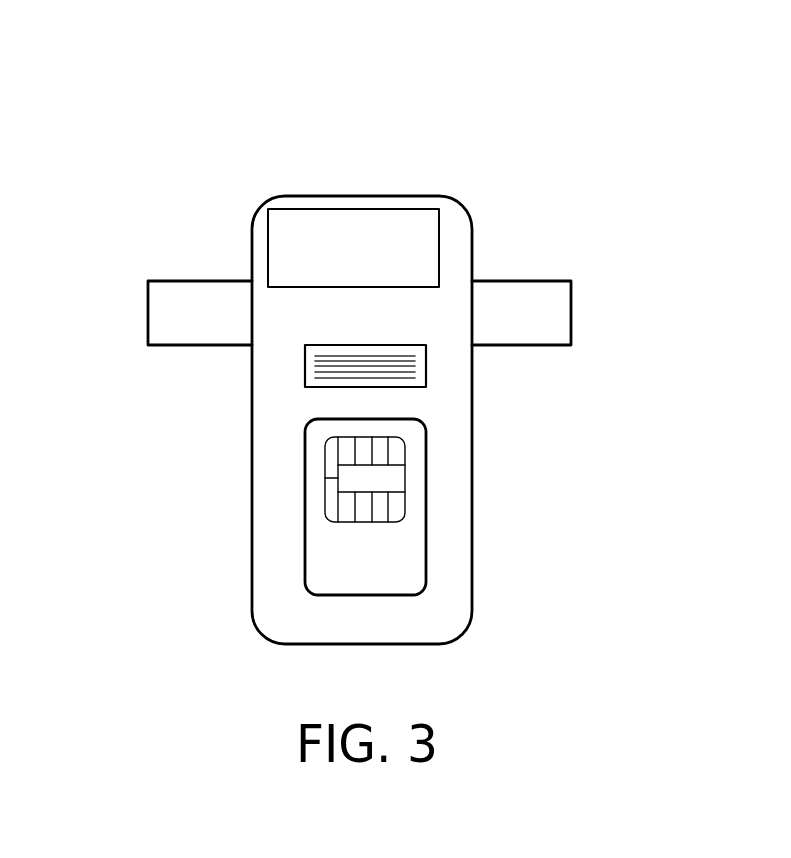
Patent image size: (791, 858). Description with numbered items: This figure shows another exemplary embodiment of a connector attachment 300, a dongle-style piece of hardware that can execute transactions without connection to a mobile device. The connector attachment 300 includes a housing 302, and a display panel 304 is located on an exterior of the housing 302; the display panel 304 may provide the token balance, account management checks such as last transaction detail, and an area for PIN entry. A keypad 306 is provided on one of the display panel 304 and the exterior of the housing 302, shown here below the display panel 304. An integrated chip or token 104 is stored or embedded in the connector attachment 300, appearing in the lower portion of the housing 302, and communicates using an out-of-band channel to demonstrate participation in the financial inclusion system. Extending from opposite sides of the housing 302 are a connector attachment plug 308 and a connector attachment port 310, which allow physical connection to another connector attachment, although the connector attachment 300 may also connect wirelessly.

The connector attachment 300 is at (160, 84).
The housing 302 is at (455, 198).
The display panel 304 is at (323, 230).
The keypad 306 is at (305, 383).
The connector attachment plug 308 is at (148, 322).
The connector attachment port 310 is at (571, 297).
The integrated chip or token 104 is at (305, 505).